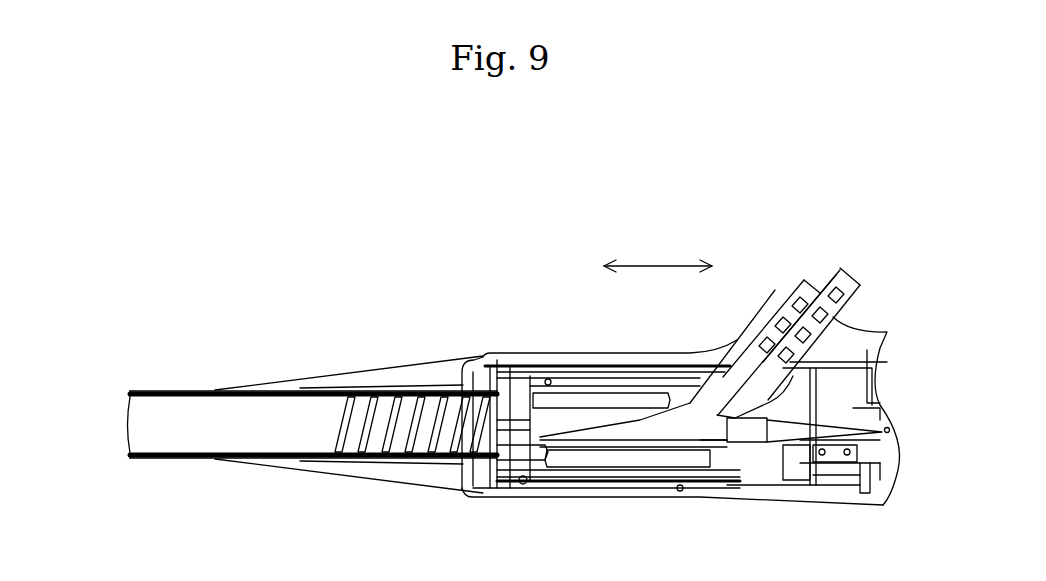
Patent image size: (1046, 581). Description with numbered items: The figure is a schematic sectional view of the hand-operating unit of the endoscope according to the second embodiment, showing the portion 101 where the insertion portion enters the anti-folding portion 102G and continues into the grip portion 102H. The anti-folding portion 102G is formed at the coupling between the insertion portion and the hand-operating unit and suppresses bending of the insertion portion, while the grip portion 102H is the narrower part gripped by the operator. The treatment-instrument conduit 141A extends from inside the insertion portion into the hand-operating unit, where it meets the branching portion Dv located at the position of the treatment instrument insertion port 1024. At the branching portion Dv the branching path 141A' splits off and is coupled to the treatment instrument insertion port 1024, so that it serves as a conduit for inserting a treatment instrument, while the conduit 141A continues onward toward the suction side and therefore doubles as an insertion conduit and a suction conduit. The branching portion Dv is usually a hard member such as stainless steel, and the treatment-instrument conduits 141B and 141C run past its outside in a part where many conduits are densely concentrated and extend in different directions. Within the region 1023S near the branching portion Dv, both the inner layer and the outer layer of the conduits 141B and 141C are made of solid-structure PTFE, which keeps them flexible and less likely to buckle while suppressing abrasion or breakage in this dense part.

The tube portion 101 is at (218, 388).
The anti-folding portion 102G is at (490, 355).
The grip portion 102H is at (945, 182).
The region near the branching portion 1023S is at (658, 257).
The treatment instrument insertion port 1024 is at (747, 323).
The treatment-instrument conduit 141A is at (526, 504).
The branching path 141A' is at (789, 330).
The treatment-instrument conduit 141B is at (598, 400).
The treatment-instrument conduit 141C is at (662, 462).
The branching portion Dv is at (703, 430).